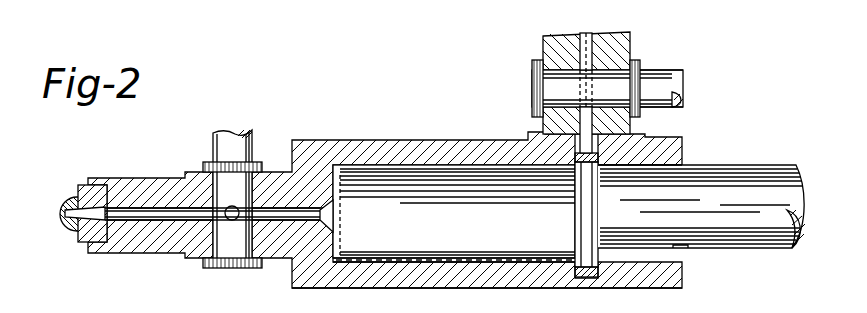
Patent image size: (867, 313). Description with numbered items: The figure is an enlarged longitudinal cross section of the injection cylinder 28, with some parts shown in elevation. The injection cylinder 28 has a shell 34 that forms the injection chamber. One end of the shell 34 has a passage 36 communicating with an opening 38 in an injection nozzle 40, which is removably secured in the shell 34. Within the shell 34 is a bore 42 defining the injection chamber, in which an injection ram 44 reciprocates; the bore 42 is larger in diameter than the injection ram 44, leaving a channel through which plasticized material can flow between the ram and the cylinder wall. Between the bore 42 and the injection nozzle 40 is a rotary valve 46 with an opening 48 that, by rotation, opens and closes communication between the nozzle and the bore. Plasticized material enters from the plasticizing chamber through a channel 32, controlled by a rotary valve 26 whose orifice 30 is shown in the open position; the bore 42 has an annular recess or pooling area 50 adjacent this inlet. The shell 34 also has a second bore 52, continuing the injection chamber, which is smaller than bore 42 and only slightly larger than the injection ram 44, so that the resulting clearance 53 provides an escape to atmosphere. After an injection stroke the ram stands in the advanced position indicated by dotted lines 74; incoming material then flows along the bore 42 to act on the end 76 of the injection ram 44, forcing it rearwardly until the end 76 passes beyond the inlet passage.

The rotary valve 26 is at (657, 70).
The injection cylinder 28 is at (452, 140).
The orifice 30 is at (595, 80).
The channel 32 is at (585, 34).
The shell 34 is at (493, 288).
The passage 36 is at (343, 213).
The opening 38 is at (63, 222).
The injection nozzle 40 is at (73, 197).
The bore 42 is at (397, 258).
The injection ram 44 is at (745, 237).
The rotary valve 46 is at (246, 145).
The opening 48 is at (232, 221).
The annular recess 50 is at (583, 280).
The second bore 52 is at (688, 248).
The clearance 53 is at (682, 165).
The dotted lines 74 is at (372, 173).
The end of the injection ram 76 is at (337, 192).